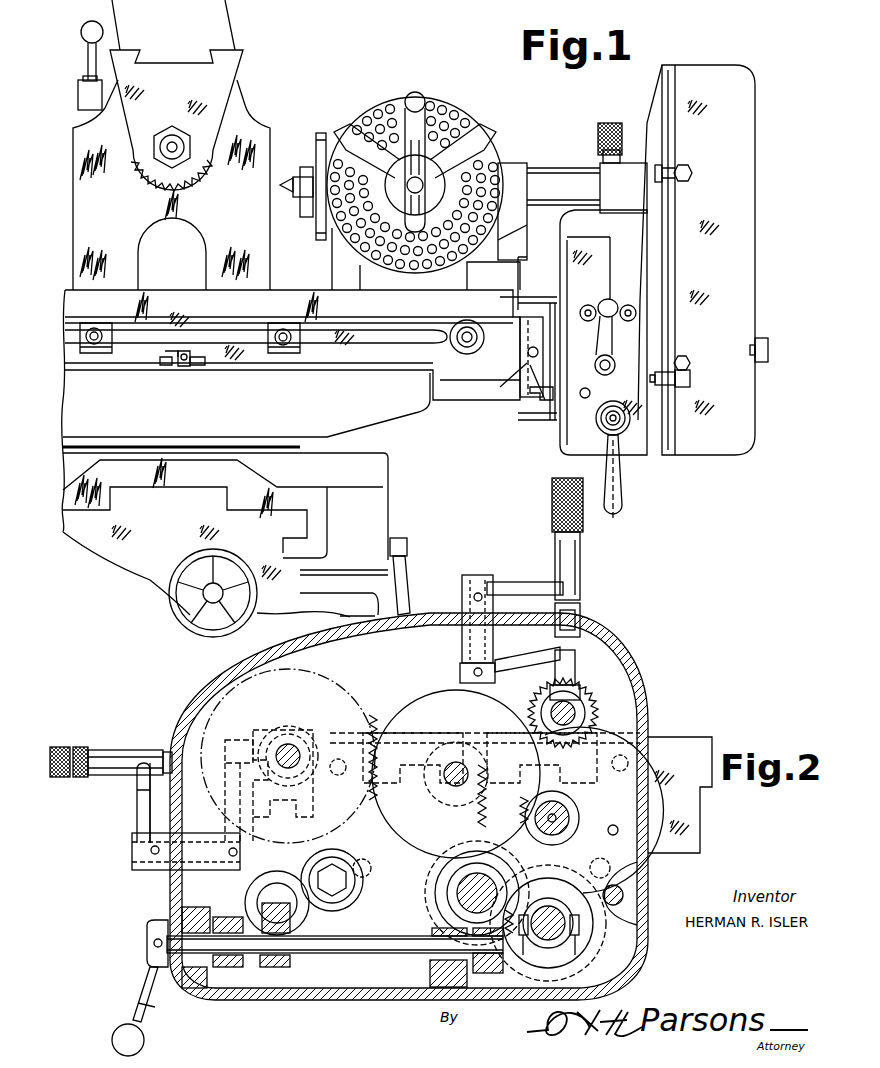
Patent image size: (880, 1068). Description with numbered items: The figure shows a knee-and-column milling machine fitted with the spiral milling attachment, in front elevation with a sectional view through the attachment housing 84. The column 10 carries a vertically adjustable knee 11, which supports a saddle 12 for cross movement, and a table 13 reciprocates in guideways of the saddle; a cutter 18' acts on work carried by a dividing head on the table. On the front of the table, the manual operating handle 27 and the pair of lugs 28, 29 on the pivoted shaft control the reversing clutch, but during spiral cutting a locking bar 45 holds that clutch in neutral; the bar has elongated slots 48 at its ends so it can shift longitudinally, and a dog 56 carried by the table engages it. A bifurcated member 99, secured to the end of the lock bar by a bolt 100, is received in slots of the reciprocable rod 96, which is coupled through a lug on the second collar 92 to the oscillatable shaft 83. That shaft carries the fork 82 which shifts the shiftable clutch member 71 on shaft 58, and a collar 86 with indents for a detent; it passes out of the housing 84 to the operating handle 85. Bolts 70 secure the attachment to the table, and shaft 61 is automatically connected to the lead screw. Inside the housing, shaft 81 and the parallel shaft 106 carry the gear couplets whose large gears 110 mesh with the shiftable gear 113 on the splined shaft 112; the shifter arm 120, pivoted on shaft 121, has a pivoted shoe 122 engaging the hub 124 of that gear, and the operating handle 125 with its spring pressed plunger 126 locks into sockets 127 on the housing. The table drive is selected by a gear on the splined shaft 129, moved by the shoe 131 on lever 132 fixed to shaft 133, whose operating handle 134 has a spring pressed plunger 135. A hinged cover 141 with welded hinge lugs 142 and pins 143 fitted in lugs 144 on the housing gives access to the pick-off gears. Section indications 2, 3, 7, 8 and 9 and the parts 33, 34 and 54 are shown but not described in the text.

In FIG. 1, the column 10 is at (255, 140).
In FIG. 1, the cutter 18' is at (184, 185).
In FIG. 1, the center 34 is at (305, 180).
In FIG. 1, the index plate 33 is at (518, 175).
In FIG. 1, the table 13 is at (289, 290).
In FIG. 2, the table 13 is at (675, 737).
In FIG. 1, the bar 54 is at (365, 345).
In FIG. 1, the elongated slots 48 is at (455, 323).
In FIG. 1, the locking bar 45 is at (367, 322).
In FIG. 1, the dog 56 is at (100, 353).
In FIG. 1, the lug 28 is at (163, 363).
In FIG. 1, the manual operating handle 27 is at (184, 366).
In FIG. 1, the lug 29 is at (200, 365).
In FIG. 1, the section line 9- 9 is at (467, 400).
In FIG. 1, the bolt 100 is at (527, 385).
In FIG. 1, the bifurcated member 99 is at (523, 395).
In FIG. 1, the saddle 12 is at (385, 500).
In FIG. 1, the knee 11 is at (122, 545).
In FIG. 1, the spring pressed plunger 135 is at (598, 137).
In FIG. 2, the spring pressed plunger 135 is at (556, 540).
In FIG. 1, the section line 2- 2 is at (612, 530).
In FIG. 1, the operating handle 125 is at (610, 343).
In FIG. 2, the operating handle 125 is at (145, 808).
In FIG. 1, the sockets 127 is at (588, 305).
In FIG. 1, the hinged cover 141 is at (730, 280).
In FIG. 1, the pins 143 is at (683, 356).
In FIG. 1, the hinge lugs 142 is at (688, 372).
In FIG. 1, the lugs 144 is at (690, 379).
In FIG. 1, the housing 84 is at (637, 452).
In FIG. 2, the housing 84 is at (347, 1000).
In FIG. 1, the operating handle 85 is at (623, 510).
In FIG. 2, the operating handle 85 is at (112, 1038).
In FIG. 1, the section line 3- 3 is at (717, 460).
In FIG. 2, the section line 7- 7 is at (199, 1030).
In FIG. 2, the section line 8- 8 is at (277, 1025).
In FIG. 2, the operating handle 134 is at (517, 582).
In FIG. 2, the shaft 133 is at (477, 637).
In FIG. 2, the lever 132 is at (530, 670).
In FIG. 2, the shoe 131 is at (575, 705).
In FIG. 2, the splined shaft 129 is at (600, 700).
In FIG. 2, the splined shaft 112 is at (290, 745).
In FIG. 2, the hub 124 is at (283, 730).
In FIG. 2, the pivoted shoe 122 is at (238, 740).
In FIG. 2, the shifter arm 120 is at (225, 790).
In FIG. 2, the spring pressed plunger 126 is at (95, 752).
In FIG. 2, the shaft 121 is at (135, 855).
In FIG. 2, the shaft 106 is at (450, 787).
In FIG. 2, the shiftable gear 113 is at (365, 810).
In FIG. 2, the large gear 110 is at (395, 840).
In FIG. 2, the shaft 81 is at (570, 817).
In FIG. 2, the shaft 61 is at (447, 893).
In FIG. 2, the shaft 58 is at (540, 950).
In FIG. 2, the shiftable clutch member 71 is at (560, 950).
In FIG. 2, the bolts 70 is at (330, 903).
In FIG. 2, the reciprocable rod 96 is at (298, 905).
In FIG. 2, the oscillatable shaft 83 is at (392, 950).
In FIG. 2, the fork 82 is at (518, 970).
In FIG. 2, the collar 86 is at (225, 967).
In FIG. 2, the second collar 92 is at (283, 967).